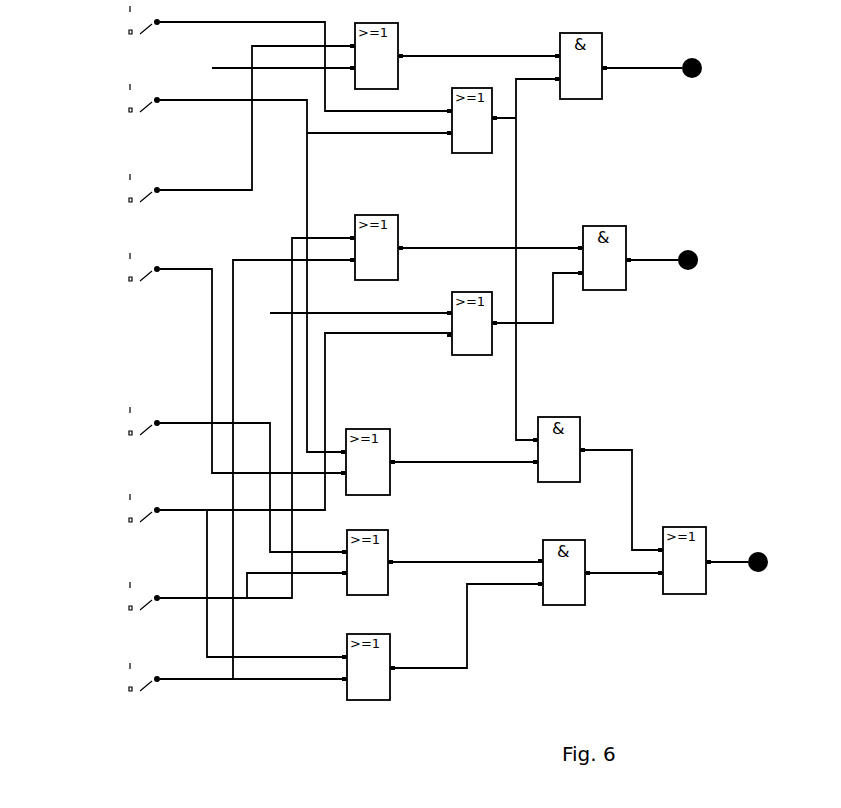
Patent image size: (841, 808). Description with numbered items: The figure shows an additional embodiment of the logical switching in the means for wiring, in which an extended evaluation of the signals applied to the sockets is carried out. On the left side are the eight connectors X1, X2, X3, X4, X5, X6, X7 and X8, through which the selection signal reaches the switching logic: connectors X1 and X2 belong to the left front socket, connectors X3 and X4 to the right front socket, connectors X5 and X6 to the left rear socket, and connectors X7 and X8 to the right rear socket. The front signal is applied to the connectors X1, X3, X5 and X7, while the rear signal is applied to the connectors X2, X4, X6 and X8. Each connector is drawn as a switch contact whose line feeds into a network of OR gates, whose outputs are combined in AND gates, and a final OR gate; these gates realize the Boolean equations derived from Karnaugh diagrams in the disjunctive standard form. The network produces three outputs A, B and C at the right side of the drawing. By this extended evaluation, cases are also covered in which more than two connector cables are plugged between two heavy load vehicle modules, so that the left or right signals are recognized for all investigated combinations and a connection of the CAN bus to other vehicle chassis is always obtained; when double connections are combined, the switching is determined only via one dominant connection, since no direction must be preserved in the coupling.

The connector X1 is at (249, 55).
The connector X2 is at (249, 259).
The connector X3 is at (201, 136).
The connector X4 is at (201, 270).
The connector X5 is at (249, 432).
The connector X6 is at (249, 495).
The connector X7 is at (201, 435).
The connector X8 is at (201, 487).
The output signal A is at (722, 62).
The output signal B is at (721, 259).
The output signal C is at (752, 517).